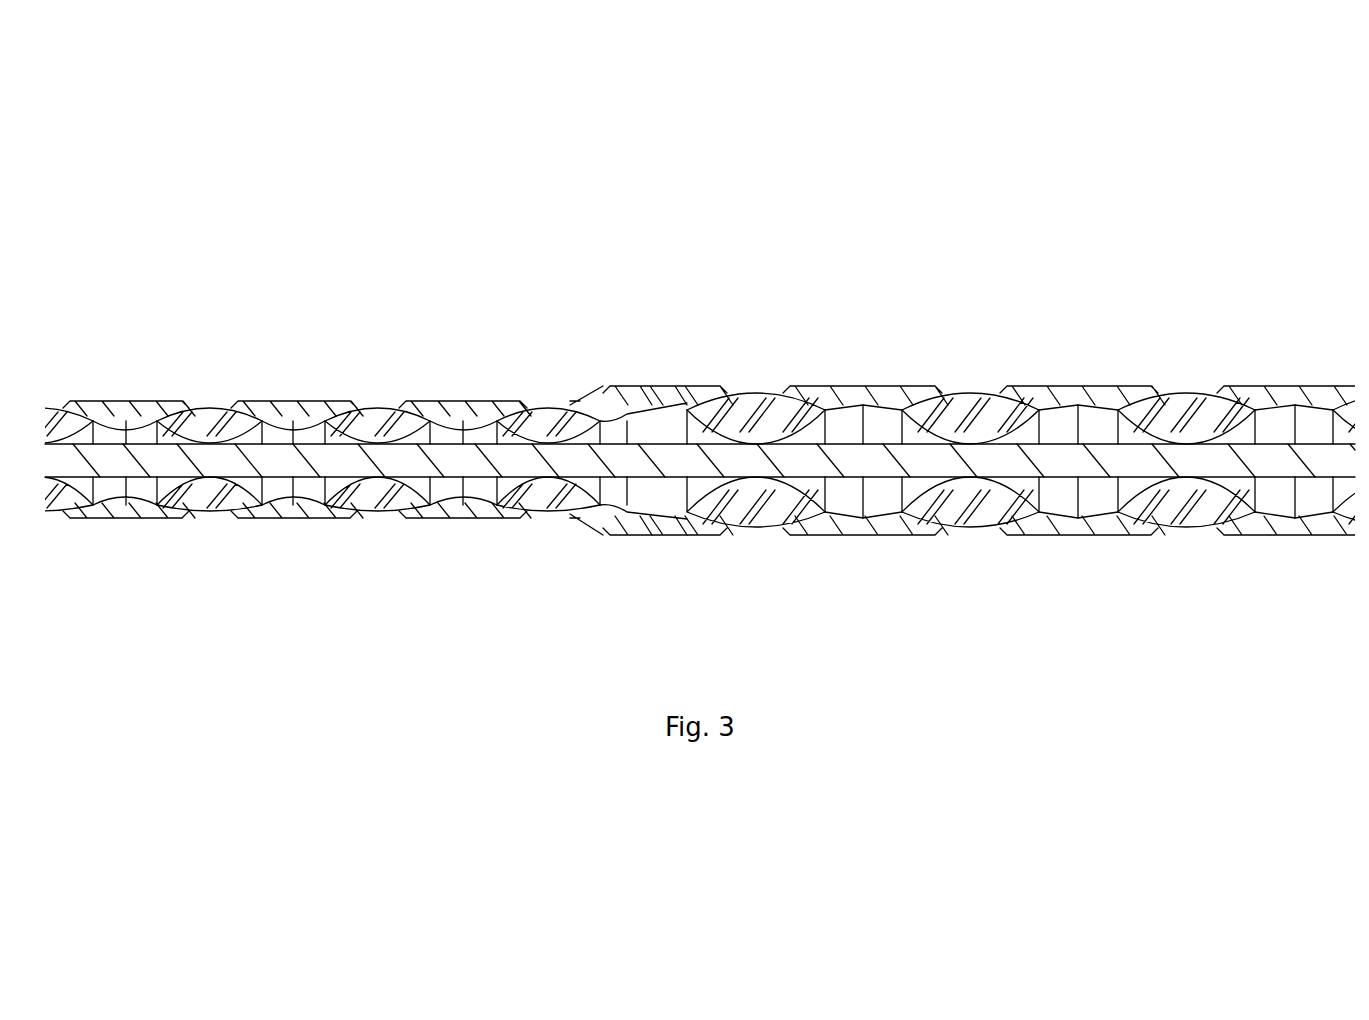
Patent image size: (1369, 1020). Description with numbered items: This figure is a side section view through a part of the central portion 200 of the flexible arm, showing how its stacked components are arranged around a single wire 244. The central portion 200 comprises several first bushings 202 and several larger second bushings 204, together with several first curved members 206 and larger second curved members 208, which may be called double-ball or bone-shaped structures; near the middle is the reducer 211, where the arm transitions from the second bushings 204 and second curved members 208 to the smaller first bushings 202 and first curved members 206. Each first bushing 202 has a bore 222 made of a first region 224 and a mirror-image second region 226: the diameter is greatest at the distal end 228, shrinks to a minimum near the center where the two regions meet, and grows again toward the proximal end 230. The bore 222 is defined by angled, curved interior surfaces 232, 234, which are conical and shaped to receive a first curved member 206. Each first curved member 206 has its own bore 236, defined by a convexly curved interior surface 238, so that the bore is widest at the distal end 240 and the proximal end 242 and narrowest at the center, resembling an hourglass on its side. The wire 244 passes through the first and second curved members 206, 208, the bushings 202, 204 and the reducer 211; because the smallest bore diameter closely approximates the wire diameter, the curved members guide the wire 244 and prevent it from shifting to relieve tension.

The central portion 200 is at (1028, 176).
The first bushing 202 is at (139, 387).
The second bushing 204 is at (841, 370).
The first curved member 206 is at (210, 390).
The second curved member 208 is at (755, 546).
The reducer 211 is at (667, 368).
The bore 222 is at (451, 499).
The first region 224 is at (457, 487).
The second region 226 is at (478, 490).
The distal end 228 is at (409, 527).
The proximal end 230 is at (532, 524).
The interior surface 232 is at (490, 425).
The interior surface 234 is at (437, 425).
The bore 236 is at (257, 496).
The interior surface 238 is at (158, 497).
The distal end 240 is at (151, 508).
The proximal end 242 is at (272, 491).
The wire 244 is at (870, 458).